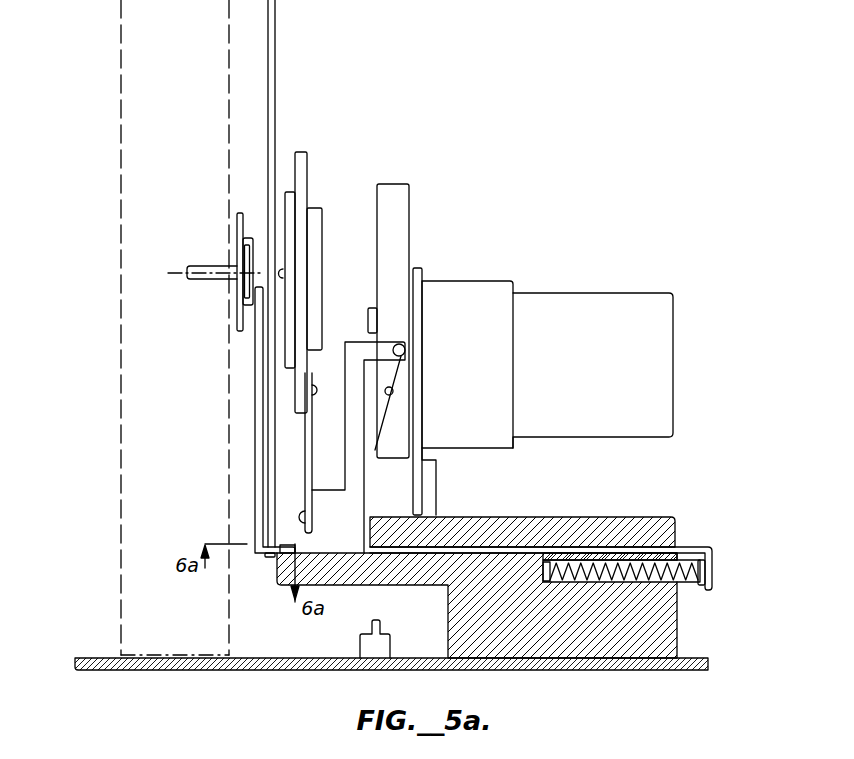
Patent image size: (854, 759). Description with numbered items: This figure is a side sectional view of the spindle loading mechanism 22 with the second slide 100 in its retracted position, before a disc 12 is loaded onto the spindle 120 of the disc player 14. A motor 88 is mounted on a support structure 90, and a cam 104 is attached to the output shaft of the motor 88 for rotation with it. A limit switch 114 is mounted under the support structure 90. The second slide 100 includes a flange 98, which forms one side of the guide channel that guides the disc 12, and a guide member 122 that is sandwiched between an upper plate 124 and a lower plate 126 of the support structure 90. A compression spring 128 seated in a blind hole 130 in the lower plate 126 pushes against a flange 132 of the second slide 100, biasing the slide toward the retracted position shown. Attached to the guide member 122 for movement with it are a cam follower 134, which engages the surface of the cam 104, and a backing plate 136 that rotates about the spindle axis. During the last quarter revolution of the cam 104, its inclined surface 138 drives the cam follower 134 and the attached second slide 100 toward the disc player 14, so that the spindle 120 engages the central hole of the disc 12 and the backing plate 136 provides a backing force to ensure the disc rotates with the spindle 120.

The disc 12 is at (277, 62).
The disc player 14 is at (121, 152).
The spindle loading mechanism 22 is at (354, 142).
The motor 88 is at (566, 293).
The support structure 90 is at (530, 517).
The flange 98 is at (255, 437).
The second slide 100 is at (701, 546).
The cam 104 is at (409, 226).
The limit switch 114 is at (360, 645).
The spindle 120 is at (236, 248).
The guide member 122 is at (468, 517).
The upper plate 124 is at (628, 517).
The lower plate 126 is at (677, 625).
The compression spring 128 is at (699, 580).
The blind hole 130 is at (548, 565).
The flange 132 is at (712, 578).
The cam follower 134 is at (343, 458).
The backing plate 136 is at (289, 192).
The inclined surface 138 is at (393, 390).